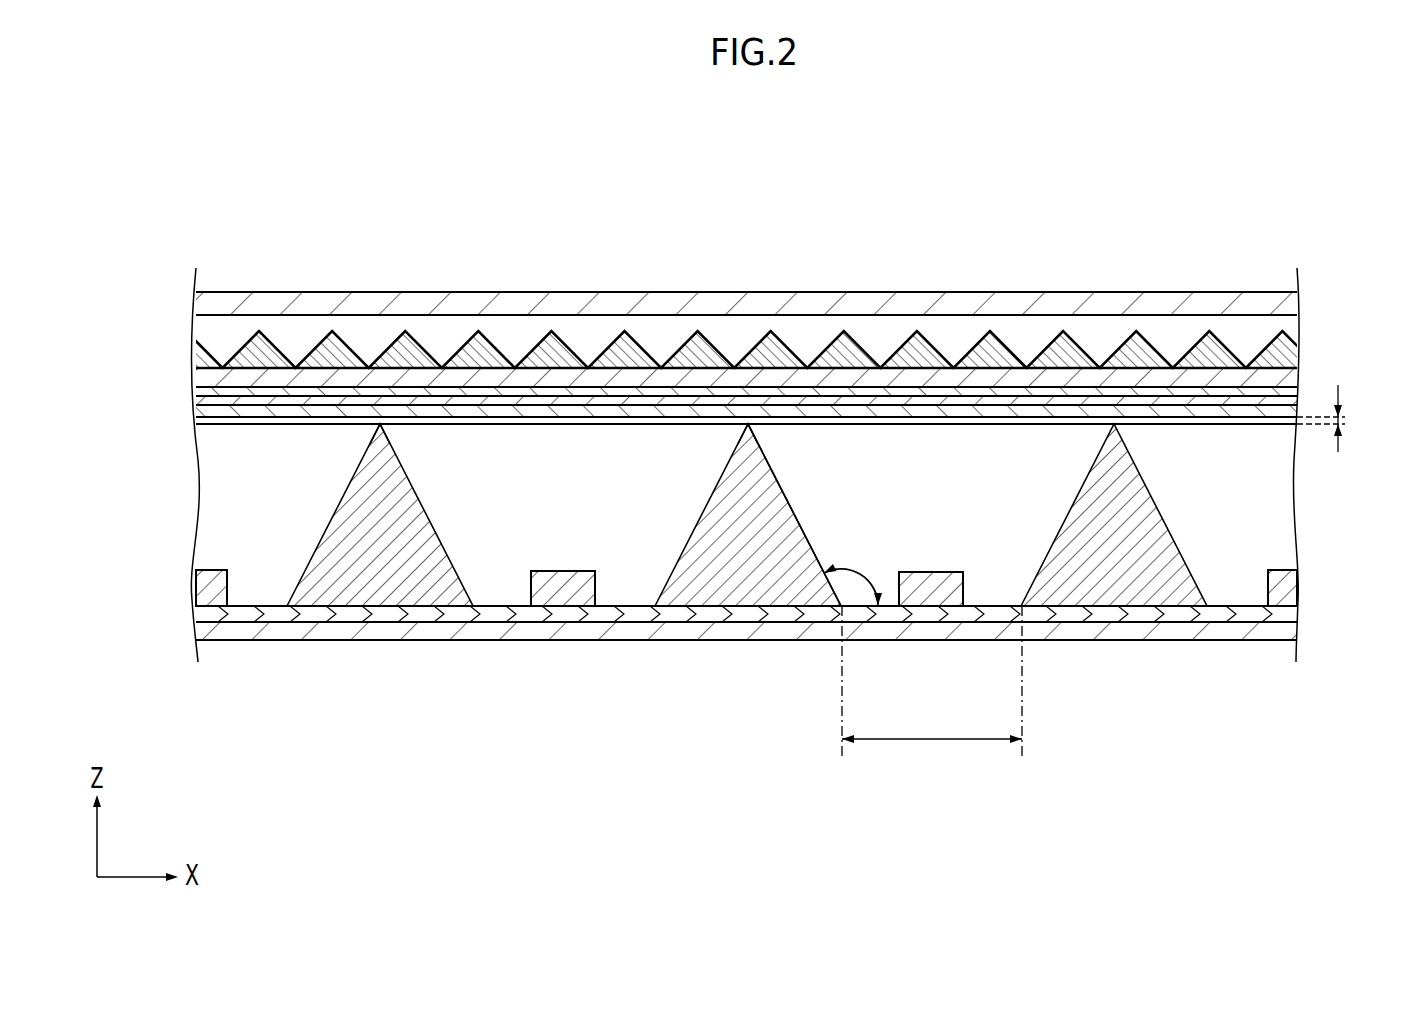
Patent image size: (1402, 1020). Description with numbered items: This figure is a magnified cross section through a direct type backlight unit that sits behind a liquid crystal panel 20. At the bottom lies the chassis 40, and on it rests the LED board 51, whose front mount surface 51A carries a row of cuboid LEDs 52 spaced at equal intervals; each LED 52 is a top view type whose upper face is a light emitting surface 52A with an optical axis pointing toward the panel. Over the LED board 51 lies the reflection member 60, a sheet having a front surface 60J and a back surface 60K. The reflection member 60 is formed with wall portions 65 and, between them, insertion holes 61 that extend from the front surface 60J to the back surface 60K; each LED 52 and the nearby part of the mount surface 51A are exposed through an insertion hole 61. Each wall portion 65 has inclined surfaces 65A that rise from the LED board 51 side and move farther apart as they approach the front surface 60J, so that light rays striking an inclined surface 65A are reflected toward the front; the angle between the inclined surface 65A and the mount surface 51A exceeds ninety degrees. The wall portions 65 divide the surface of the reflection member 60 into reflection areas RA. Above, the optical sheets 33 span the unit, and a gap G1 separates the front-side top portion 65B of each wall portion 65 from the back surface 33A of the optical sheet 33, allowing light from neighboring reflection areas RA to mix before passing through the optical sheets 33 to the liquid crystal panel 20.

The liquid crystal panel 20 is at (248, 300).
The optical sheets 33 is at (182, 335).
The back surface of optical sheet 33A is at (578, 440).
The gap G1 is at (1339, 418).
The reflection member 60 is at (1207, 527).
The front surface of reflection member 60J is at (381, 412).
The back surface of reflection member 60K is at (384, 620).
The wall portion 65 is at (1130, 582).
The inclined surface 65A is at (779, 484).
The front-side top portion of wall portion 65B is at (748, 424).
The insertion hole 61 is at (932, 693).
The reflection area RA is at (1007, 458).
The LED 52 is at (582, 593).
The light emitting surface 52A is at (588, 592).
The LED board 51 is at (541, 614).
The mount surface 51A is at (500, 606).
The chassis 40 is at (737, 633).